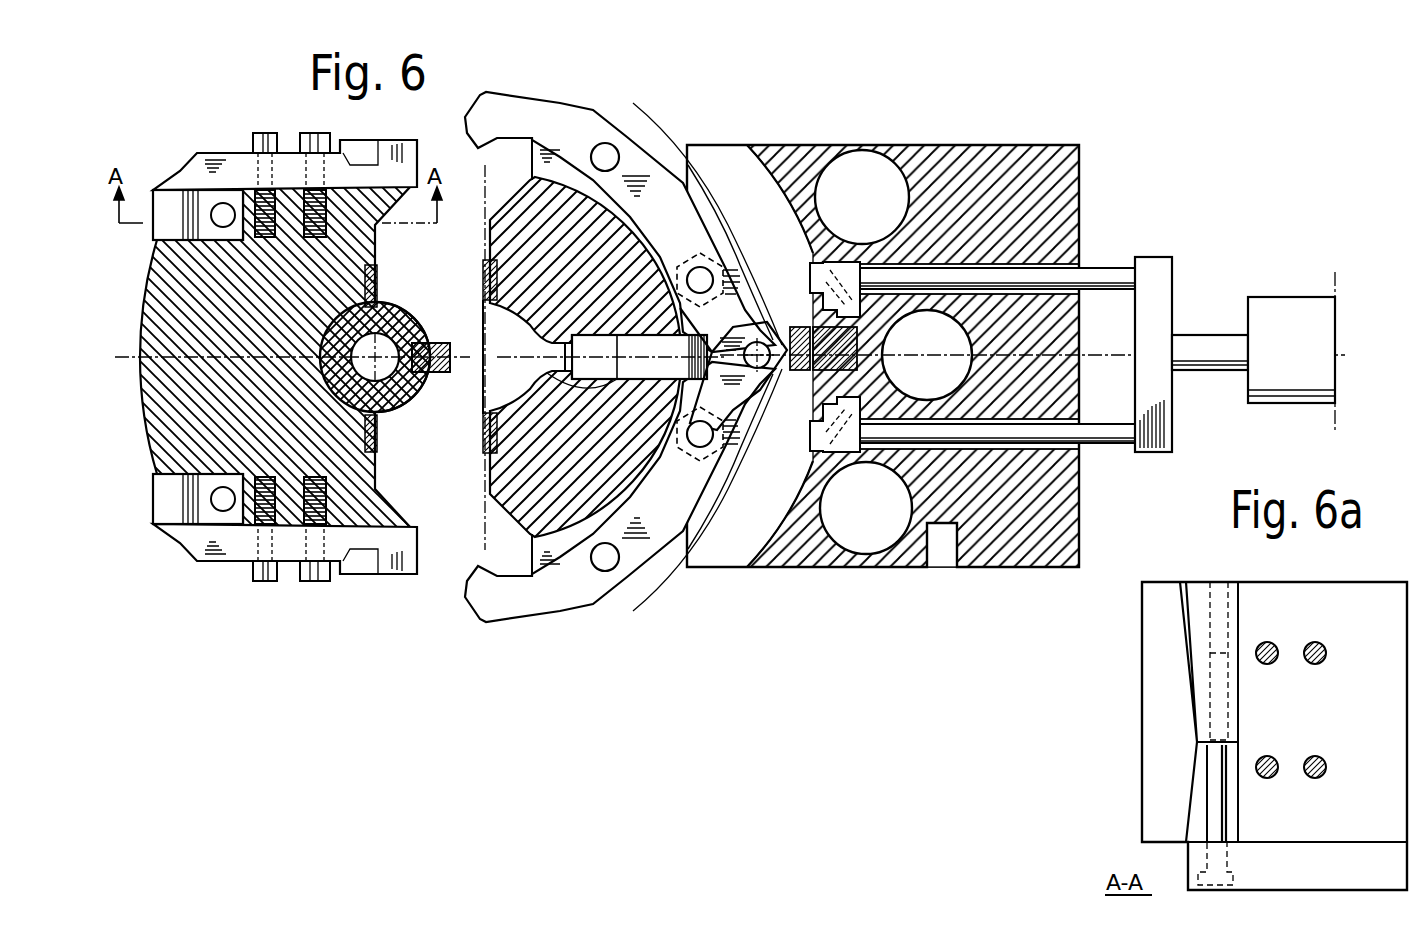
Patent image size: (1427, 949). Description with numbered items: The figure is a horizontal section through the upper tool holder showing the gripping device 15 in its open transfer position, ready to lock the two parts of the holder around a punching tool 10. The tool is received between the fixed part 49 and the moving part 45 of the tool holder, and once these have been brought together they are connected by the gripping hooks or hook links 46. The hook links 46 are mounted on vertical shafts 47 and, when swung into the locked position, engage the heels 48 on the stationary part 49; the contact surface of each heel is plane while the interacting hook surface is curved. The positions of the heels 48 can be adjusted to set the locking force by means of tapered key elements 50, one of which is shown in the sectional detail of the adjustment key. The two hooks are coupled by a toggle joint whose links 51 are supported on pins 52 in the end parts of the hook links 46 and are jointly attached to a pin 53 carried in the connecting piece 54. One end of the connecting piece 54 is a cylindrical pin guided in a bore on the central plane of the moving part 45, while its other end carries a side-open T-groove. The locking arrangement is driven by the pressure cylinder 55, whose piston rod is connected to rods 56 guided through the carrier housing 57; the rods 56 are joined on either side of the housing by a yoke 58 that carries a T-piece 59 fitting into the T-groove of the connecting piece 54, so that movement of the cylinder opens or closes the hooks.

In FIG. 6, the punching tool 10 is at (402, 402).
In FIG. 6, the gripping device 15 is at (852, 135).
In FIG. 6, the moving part 45 is at (483, 250).
In FIG. 6, the hook links 46 is at (537, 121).
In FIG. 6, the vertical shafts 47 is at (610, 150).
In FIG. 6, the heels 48 is at (388, 165).
In FIG. 6a, the heels 48 is at (1320, 596).
In FIG. 6, the fixed part 49 is at (390, 512).
In FIG. 6, the tapered key elements 50 is at (210, 196).
In FIG. 6a, the tapered key elements 50 is at (1197, 590).
In FIG. 6, the links 51 is at (745, 300).
In FIG. 6, the pins 52 is at (703, 277).
In FIG. 6, the pin 53 is at (753, 397).
In FIG. 6, the connecting piece 54 is at (557, 383).
In FIG. 6, the pressure cylinder 55 is at (1270, 306).
In FIG. 6, the rods 56 is at (1104, 274).
In FIG. 6, the carrier housing 57 is at (1082, 176).
In FIG. 6, the yoke 58 is at (1170, 432).
In FIG. 6, the T-piece 59 is at (873, 360).